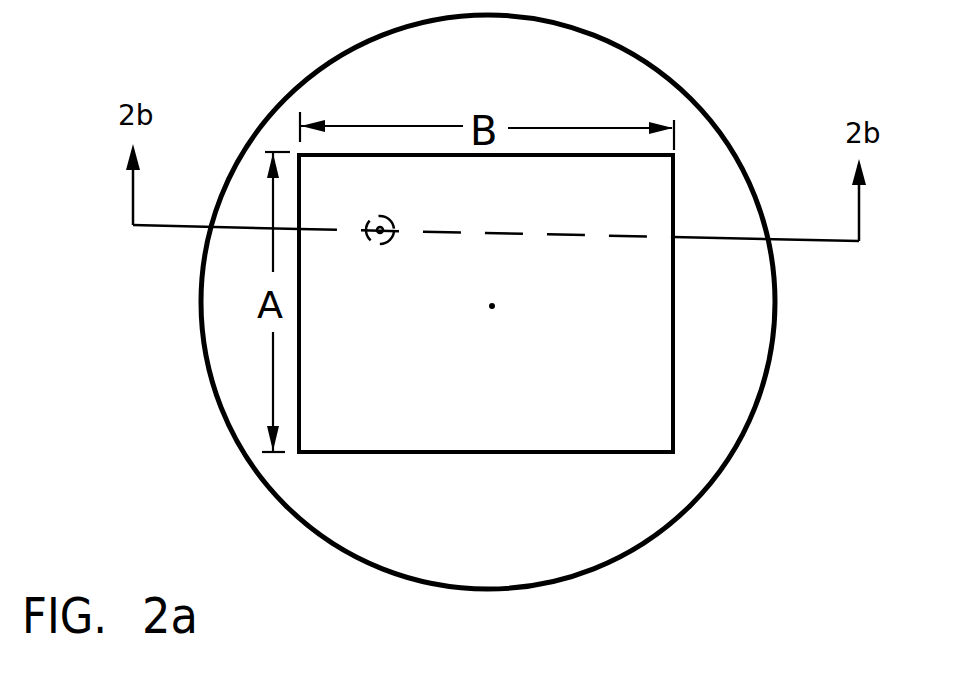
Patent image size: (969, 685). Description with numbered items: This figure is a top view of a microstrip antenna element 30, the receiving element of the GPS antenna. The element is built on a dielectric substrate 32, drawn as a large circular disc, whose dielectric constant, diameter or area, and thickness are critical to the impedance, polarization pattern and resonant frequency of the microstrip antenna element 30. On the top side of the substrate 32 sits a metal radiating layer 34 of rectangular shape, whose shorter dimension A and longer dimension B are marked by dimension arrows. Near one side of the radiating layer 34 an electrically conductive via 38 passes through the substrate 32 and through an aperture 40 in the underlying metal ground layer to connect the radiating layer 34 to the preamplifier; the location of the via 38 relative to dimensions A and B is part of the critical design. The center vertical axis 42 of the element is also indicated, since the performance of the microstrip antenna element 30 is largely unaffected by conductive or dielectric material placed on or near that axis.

The microstrip antenna element 30 is at (782, 582).
The dielectric substrate 32 is at (713, 392).
The metal radiating layer 34 is at (648, 428).
The electrically conductive via 38 is at (381, 244).
The aperture 40 is at (392, 220).
The center vertical axis 42 is at (492, 306).